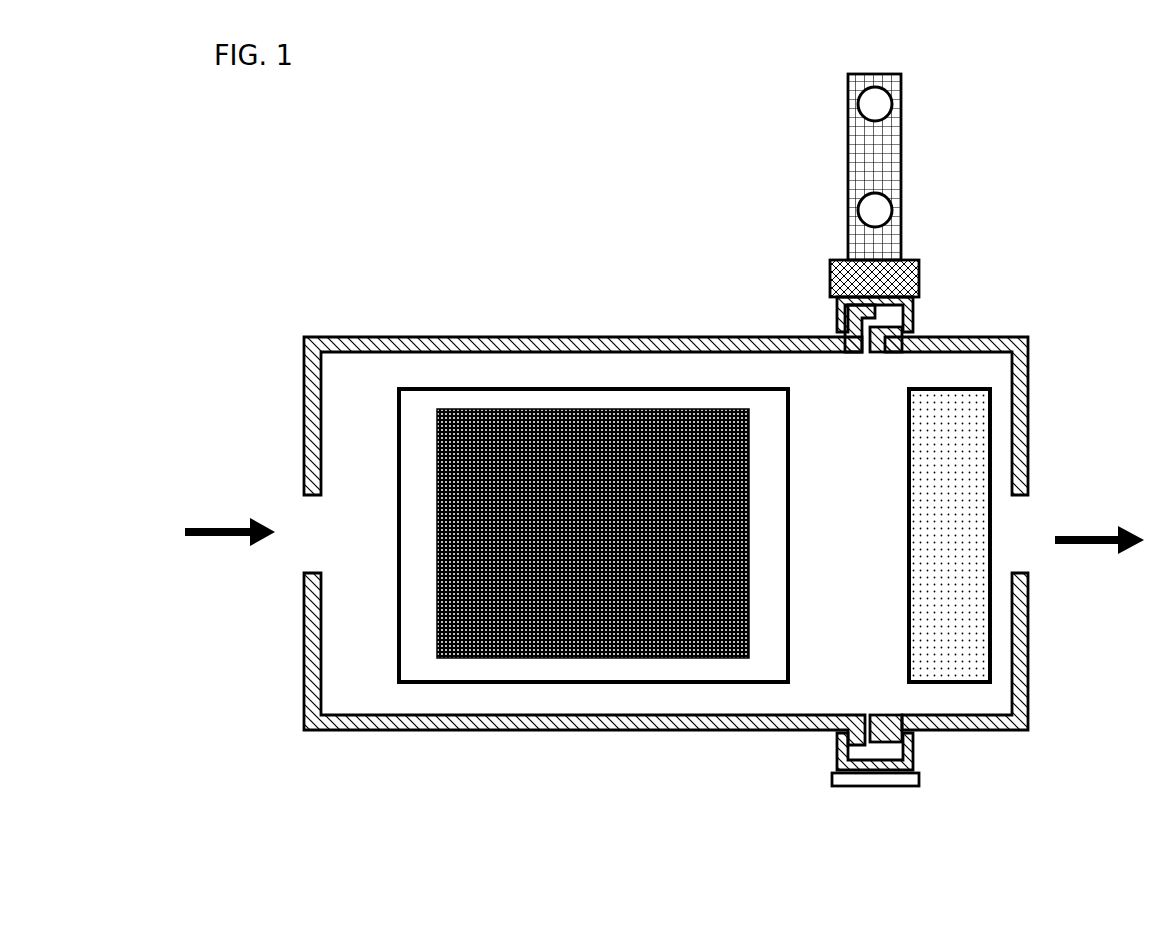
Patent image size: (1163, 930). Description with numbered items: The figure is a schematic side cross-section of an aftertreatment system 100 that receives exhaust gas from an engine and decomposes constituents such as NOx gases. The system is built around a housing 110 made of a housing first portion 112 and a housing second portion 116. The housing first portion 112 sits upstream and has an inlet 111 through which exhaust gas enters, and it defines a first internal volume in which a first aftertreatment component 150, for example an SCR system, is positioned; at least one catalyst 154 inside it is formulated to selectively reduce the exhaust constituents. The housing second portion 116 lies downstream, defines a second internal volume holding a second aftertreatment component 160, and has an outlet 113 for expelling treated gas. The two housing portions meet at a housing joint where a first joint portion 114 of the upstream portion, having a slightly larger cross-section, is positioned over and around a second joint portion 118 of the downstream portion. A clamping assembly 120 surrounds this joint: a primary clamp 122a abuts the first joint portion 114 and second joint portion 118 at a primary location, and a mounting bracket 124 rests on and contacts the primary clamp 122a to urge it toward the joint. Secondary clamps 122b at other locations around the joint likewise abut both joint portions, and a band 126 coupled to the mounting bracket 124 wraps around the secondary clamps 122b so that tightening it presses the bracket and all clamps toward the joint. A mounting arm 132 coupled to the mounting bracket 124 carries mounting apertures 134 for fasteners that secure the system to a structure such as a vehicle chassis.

The aftertreatment system 100 is at (1051, 260).
The housing 110 is at (686, 303).
The inlet 111 is at (305, 556).
The housing first portion 112 is at (490, 338).
The outlet 113 is at (1027, 540).
The first joint portion 114 is at (842, 330).
The housing second portion 116 is at (1028, 398).
The second joint portion 118 is at (870, 347).
The clamping assembly 120 is at (919, 248).
The primary clamp 122a is at (912, 316).
The secondary clamps 122b is at (918, 755).
The mounting bracket 124 is at (918, 283).
The band 126 is at (918, 778).
The mounting arm 132 is at (893, 138).
The mounting apertures 134 is at (866, 103).
The first aftertreatment component 150 is at (495, 684).
The catalyst 154 is at (637, 620).
The second aftertreatment component 160 is at (995, 655).